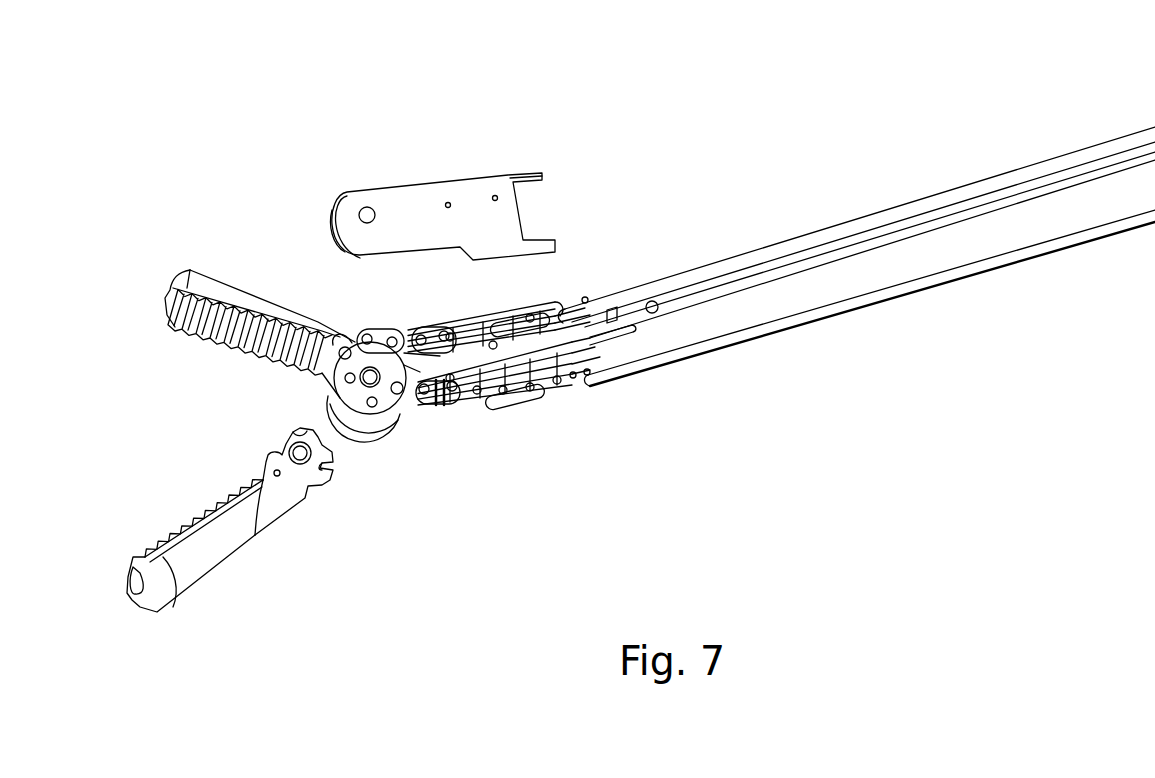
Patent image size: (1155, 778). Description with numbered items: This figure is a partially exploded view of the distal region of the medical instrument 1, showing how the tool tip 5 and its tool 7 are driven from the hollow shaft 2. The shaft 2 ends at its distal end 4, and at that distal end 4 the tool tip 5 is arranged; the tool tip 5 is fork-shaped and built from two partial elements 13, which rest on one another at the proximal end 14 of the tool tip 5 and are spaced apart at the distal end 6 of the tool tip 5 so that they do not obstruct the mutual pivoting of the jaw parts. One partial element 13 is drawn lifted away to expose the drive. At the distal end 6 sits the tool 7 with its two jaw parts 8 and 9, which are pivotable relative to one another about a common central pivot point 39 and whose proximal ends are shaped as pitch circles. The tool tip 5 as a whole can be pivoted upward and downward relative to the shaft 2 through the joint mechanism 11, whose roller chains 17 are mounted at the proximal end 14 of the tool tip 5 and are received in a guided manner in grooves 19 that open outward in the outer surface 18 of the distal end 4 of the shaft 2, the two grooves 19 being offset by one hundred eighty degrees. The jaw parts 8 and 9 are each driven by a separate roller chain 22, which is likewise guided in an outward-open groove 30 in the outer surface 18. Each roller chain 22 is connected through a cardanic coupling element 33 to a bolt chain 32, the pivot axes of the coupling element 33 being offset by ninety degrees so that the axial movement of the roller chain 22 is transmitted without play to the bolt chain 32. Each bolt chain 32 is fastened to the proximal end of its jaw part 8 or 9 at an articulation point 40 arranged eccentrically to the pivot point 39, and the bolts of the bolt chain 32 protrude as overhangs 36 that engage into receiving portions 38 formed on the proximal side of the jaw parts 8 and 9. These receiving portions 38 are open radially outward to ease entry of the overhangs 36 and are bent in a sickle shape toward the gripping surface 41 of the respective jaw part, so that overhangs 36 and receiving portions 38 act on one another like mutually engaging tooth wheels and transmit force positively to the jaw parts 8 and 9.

The medical instrument 1 is at (673, 108).
The hollow shaft 2 is at (913, 200).
The distal end of the shaft 4 is at (590, 385).
The tool tip 5 is at (396, 150).
The distal end of the tool tip 6 is at (332, 222).
The tool 7 is at (130, 255).
The jaw part 8 is at (188, 272).
The jaw part 9 is at (168, 593).
The joint mechanism 11 is at (577, 438).
The partial element 13 is at (415, 198).
The proximal end of the tool tip 14 is at (536, 172).
The roller chain 17 is at (598, 310).
The outer surface 18 is at (847, 285).
The groove 19 is at (770, 275).
The roller chain 22 is at (510, 325).
The groove 30 is at (740, 337).
The bolt chain 32 is at (373, 333).
The coupling element 33 is at (468, 330).
The overhang 36 is at (412, 407).
The receiving portion 38 is at (290, 433).
The pivot point 39 is at (380, 405).
The articulation point 40 is at (270, 463).
The gripping surface 41 is at (175, 330).